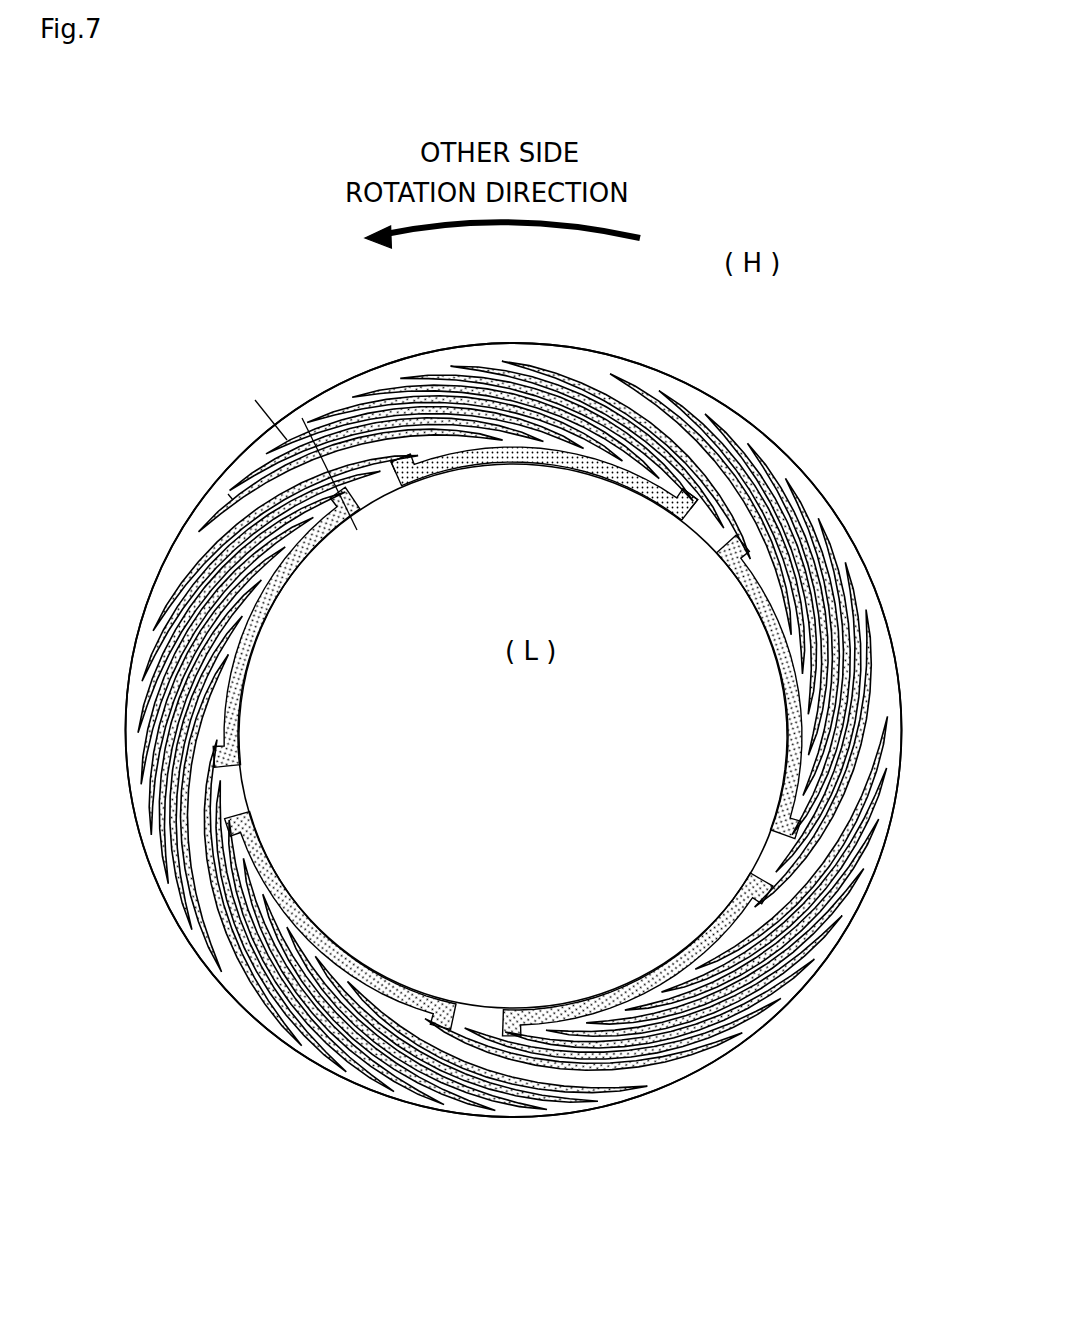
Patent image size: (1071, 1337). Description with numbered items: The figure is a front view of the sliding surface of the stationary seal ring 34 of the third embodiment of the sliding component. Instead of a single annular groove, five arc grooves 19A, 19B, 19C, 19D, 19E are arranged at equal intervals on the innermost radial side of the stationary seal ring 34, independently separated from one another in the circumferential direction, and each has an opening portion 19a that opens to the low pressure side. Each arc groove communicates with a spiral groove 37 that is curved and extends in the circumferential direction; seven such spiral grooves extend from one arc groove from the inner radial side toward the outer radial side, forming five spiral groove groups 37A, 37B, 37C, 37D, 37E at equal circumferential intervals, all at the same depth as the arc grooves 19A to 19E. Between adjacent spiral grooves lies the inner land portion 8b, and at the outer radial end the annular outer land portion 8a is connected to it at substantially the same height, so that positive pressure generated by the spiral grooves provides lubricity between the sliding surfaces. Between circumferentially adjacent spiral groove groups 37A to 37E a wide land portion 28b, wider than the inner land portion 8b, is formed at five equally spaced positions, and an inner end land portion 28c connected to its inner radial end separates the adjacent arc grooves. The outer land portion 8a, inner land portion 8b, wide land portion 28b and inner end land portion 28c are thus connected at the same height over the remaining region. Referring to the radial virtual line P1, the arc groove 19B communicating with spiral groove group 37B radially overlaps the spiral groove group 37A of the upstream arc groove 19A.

The stationary seal ring 34 is at (725, 373).
The outer land portion 8a is at (247, 463).
The inner land portion 8b is at (302, 418).
The virtual line P1 is at (262, 407).
The wide land portion 28b is at (230, 497).
The inner end land portion 28c is at (382, 482).
The opening portion 19a is at (600, 478).
The arc groove 19A is at (570, 468).
The arc groove 19B is at (265, 627).
The arc groove 19C is at (340, 925).
The arc groove 19D is at (625, 967).
The arc groove 19E is at (780, 678).
The spiral groove 37 is at (433, 367).
The spiral groove group 37A is at (474, 460).
The spiral groove group 37B is at (120, 800).
The spiral groove group 37C is at (428, 1125).
The spiral groove group 37D is at (840, 960).
The spiral groove group 37E is at (808, 467).